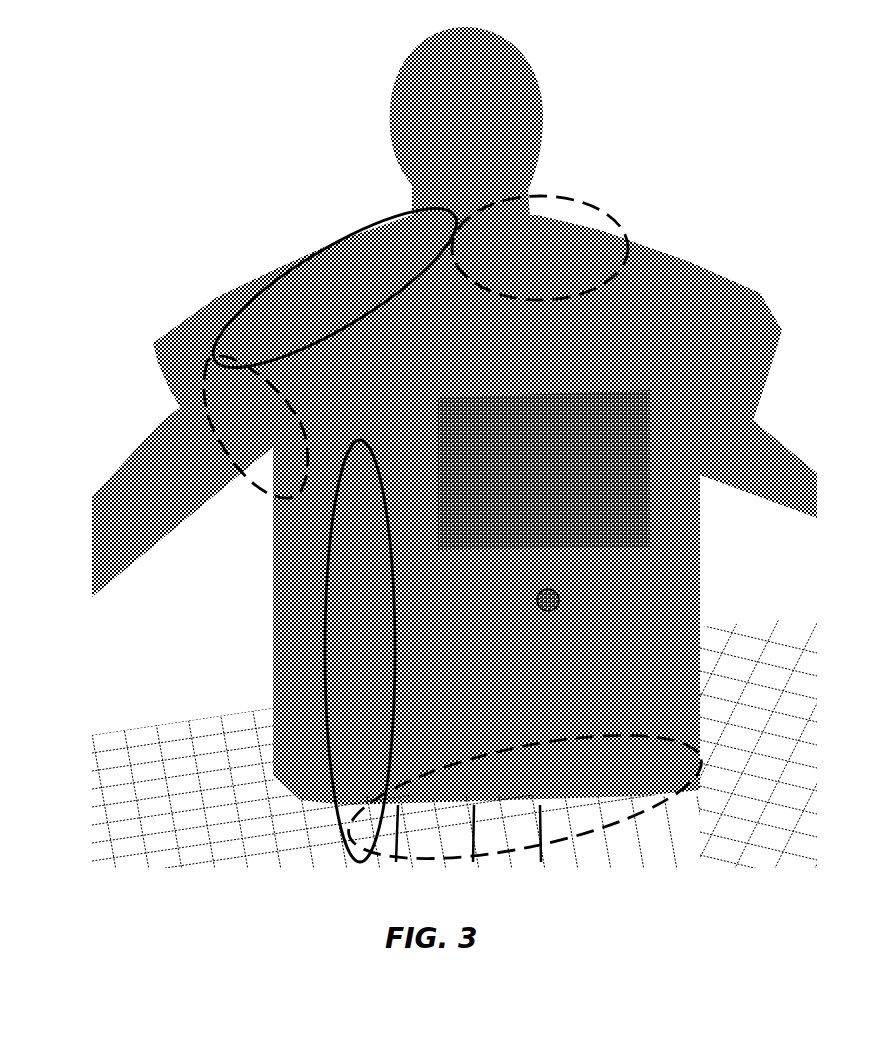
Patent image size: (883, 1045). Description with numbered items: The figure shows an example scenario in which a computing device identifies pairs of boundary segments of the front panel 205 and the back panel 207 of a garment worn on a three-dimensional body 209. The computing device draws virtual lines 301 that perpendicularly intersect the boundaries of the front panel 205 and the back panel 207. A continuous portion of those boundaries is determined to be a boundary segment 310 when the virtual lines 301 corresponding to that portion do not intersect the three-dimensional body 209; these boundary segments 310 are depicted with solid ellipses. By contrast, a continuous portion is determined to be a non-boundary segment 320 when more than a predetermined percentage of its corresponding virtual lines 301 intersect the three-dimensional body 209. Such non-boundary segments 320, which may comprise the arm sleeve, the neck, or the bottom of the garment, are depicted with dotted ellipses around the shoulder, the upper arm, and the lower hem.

The virtual lines 301 is at (298, 612).
The three-dimensional body 209 is at (533, 73).
The front panel 205 is at (645, 240).
The back panel 207 is at (238, 282).
The boundary segment 310 is at (378, 352).
The non-boundary segment 320 is at (547, 303).